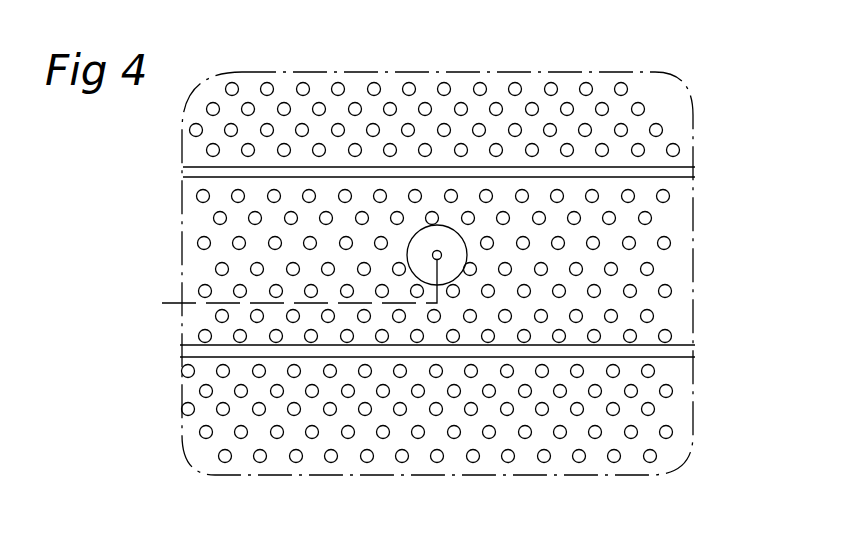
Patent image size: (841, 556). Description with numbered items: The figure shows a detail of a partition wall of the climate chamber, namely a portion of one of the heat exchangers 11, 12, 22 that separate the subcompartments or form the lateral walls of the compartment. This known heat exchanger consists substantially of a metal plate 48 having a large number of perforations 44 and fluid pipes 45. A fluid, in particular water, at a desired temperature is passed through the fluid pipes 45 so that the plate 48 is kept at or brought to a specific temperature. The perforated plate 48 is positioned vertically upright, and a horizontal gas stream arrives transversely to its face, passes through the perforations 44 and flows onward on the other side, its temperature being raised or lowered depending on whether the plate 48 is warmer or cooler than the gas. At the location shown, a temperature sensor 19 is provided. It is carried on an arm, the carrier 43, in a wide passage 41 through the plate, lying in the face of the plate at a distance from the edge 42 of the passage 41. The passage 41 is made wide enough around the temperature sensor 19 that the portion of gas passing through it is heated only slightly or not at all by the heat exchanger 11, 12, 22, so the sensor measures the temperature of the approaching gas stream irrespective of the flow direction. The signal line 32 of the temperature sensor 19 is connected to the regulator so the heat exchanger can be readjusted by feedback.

The heat exchanger 11 is at (462, 314).
The heat exchanger 12 is at (462, 314).
The heat exchanger 22 is at (597, 492).
The temperature sensor 19 is at (463, 240).
The signal line 32 is at (187, 303).
The passage 41 is at (466, 262).
The edge of the passage 42 is at (452, 265).
The carrier 43 is at (453, 275).
The perforation 44 is at (669, 195).
The fluid pipe in the heat exchanger 45 is at (695, 167).
The plate 48 is at (677, 407).